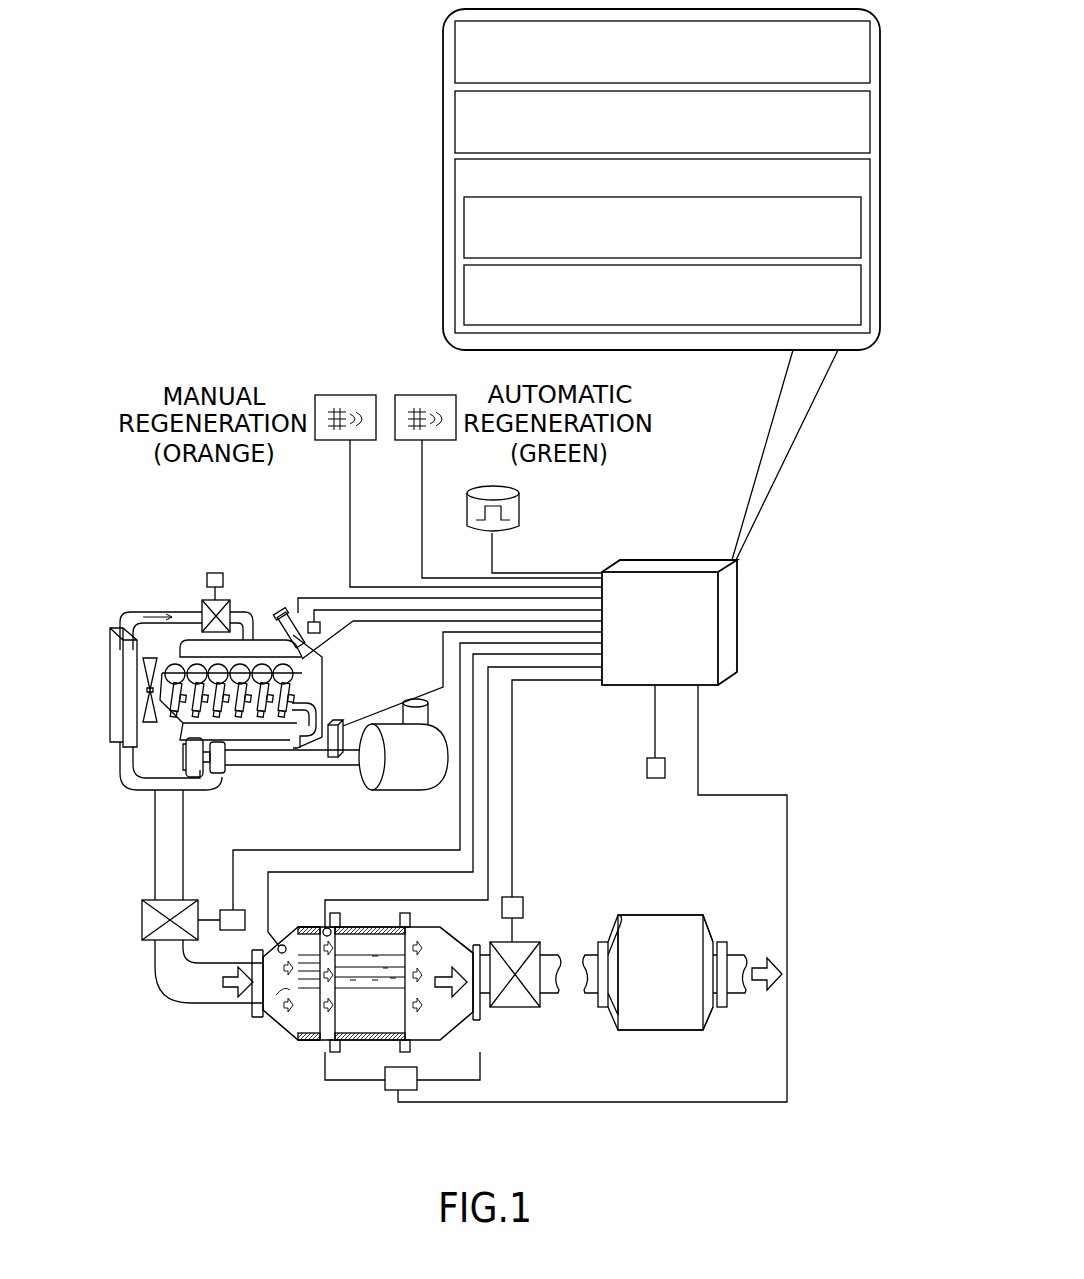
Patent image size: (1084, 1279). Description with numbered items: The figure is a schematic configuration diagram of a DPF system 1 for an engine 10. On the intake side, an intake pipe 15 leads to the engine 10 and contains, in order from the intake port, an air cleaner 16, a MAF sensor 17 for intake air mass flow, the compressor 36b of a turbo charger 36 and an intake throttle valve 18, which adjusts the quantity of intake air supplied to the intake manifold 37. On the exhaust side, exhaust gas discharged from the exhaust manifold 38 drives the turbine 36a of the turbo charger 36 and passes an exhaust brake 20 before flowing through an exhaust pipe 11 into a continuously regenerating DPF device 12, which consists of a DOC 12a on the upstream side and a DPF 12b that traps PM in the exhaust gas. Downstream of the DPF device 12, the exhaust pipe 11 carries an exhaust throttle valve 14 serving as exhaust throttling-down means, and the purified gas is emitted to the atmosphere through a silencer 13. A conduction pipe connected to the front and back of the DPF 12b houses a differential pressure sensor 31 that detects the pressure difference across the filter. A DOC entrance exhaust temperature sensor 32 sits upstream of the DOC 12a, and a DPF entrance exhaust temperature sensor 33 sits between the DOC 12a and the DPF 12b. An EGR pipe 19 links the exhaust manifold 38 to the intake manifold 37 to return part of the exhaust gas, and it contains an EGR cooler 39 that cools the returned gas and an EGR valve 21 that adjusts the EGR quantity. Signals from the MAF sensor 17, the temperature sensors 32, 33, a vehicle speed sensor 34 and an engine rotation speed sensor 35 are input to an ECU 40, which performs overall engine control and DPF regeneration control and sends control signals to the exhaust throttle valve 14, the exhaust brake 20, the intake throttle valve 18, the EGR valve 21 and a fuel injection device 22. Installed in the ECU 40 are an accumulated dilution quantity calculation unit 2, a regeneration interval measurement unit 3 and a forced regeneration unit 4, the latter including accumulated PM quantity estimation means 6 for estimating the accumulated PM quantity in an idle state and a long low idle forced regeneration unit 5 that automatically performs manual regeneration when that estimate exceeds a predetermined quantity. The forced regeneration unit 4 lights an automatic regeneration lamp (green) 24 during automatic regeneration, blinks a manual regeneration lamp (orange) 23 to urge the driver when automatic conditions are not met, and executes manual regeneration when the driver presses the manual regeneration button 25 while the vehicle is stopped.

The DPF system 1 is at (236, 261).
The accumulated dilution quantity calculation unit 2 is at (870, 50).
The regeneration interval measurement unit 3 is at (870, 121).
The forced regeneration unit 4 is at (870, 176).
The long low idle forced regeneration unit 5 is at (861, 221).
The accumulated PM quantity estimation means 6 is at (861, 295).
The engine 10 is at (381, 643).
The exhaust pipe 11 is at (156, 852).
The continuously regenerating DPF device 12 is at (371, 1028).
The DOC 12a is at (308, 1012).
The DPF 12b is at (362, 1013).
The silencer 13 is at (662, 1030).
The exhaust throttle valve 14 is at (515, 1007).
The intake pipe 15 is at (123, 785).
The air cleaner 16 is at (400, 790).
The MAF sensor 17 is at (333, 760).
The intake throttle valve 18 is at (215, 573).
The EGR pipe 19 is at (299, 741).
The exhaust brake 20 is at (142, 920).
The EGR valve 21 is at (292, 616).
The fuel injection device 22 is at (175, 683).
The manual regeneration lamp (orange) 23 is at (348, 395).
The automatic regeneration lamp (green) 24 is at (428, 395).
The manual regeneration button 25 is at (492, 490).
The differential pressure sensor 31 is at (393, 1090).
The DOC entrance exhaust temperature sensor 32 is at (285, 946).
The DPF entrance exhaust temperature sensor 33 is at (329, 928).
The vehicle speed sensor 34 is at (658, 778).
The engine rotation speed sensor 35 is at (317, 621).
The turbo charger 36 is at (231, 788).
The turbine 36a is at (200, 780).
The compressor 36b is at (224, 774).
The intake manifold 37 is at (192, 647).
The exhaust manifold 38 is at (188, 737).
The EGR cooler 39 is at (310, 689).
The ECU 40 is at (737, 613).